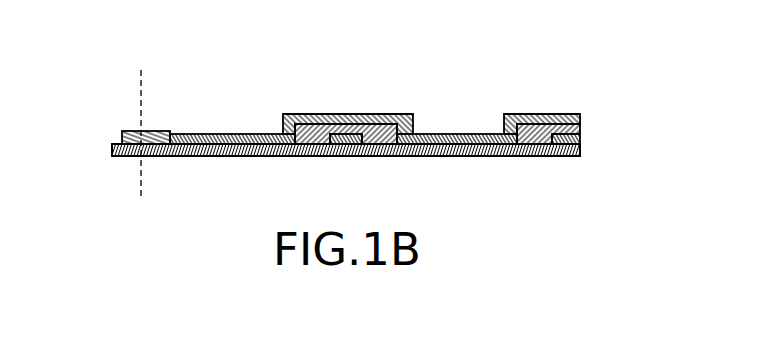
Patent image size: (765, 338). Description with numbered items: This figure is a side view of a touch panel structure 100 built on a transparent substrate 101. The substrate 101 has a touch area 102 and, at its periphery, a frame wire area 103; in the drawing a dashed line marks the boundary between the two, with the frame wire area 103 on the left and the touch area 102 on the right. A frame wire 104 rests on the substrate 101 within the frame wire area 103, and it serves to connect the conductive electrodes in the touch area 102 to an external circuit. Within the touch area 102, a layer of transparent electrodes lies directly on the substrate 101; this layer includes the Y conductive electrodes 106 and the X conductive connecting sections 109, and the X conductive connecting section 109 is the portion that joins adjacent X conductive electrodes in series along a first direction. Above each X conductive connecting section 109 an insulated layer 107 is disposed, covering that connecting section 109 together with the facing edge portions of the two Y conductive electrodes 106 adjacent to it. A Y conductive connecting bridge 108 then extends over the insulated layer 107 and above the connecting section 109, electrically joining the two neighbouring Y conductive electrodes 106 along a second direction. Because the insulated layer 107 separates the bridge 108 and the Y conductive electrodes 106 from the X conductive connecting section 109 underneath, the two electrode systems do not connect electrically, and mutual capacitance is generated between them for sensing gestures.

The touch panel structure 100 is at (86, 19).
The transparent substrate 101 is at (541, 157).
The touch area 102 is at (410, 89).
The frame wire area 103 is at (122, 88).
The frame wire 104 is at (160, 131).
The Y conductive electrode 106 is at (217, 134).
The insulated layer 107 is at (368, 124).
The Y conductive connecting bridge 108 is at (331, 114).
The X conductive connecting section 109 is at (350, 145).